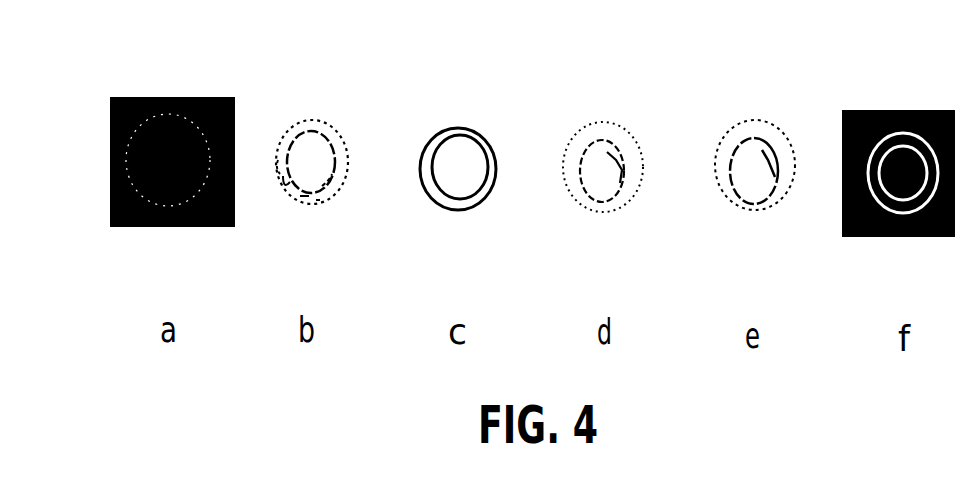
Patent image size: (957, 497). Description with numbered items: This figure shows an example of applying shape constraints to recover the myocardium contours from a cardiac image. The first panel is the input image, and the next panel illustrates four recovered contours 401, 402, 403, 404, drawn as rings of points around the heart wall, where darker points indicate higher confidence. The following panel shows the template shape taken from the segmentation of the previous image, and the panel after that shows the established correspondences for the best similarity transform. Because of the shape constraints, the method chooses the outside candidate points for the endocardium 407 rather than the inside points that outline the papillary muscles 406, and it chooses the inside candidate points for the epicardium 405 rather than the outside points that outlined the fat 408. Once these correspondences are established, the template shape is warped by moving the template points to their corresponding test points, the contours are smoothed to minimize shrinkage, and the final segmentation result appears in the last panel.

The recovered contour 401 is at (295, 113).
The recovered contour 402 is at (330, 138).
The recovered contour 403 is at (287, 178).
The recovered contour 404 is at (317, 177).
The epicardium 405 is at (738, 205).
The papillary muscles 406 is at (765, 152).
The endocardium 407 is at (778, 172).
The fat 408 is at (765, 210).